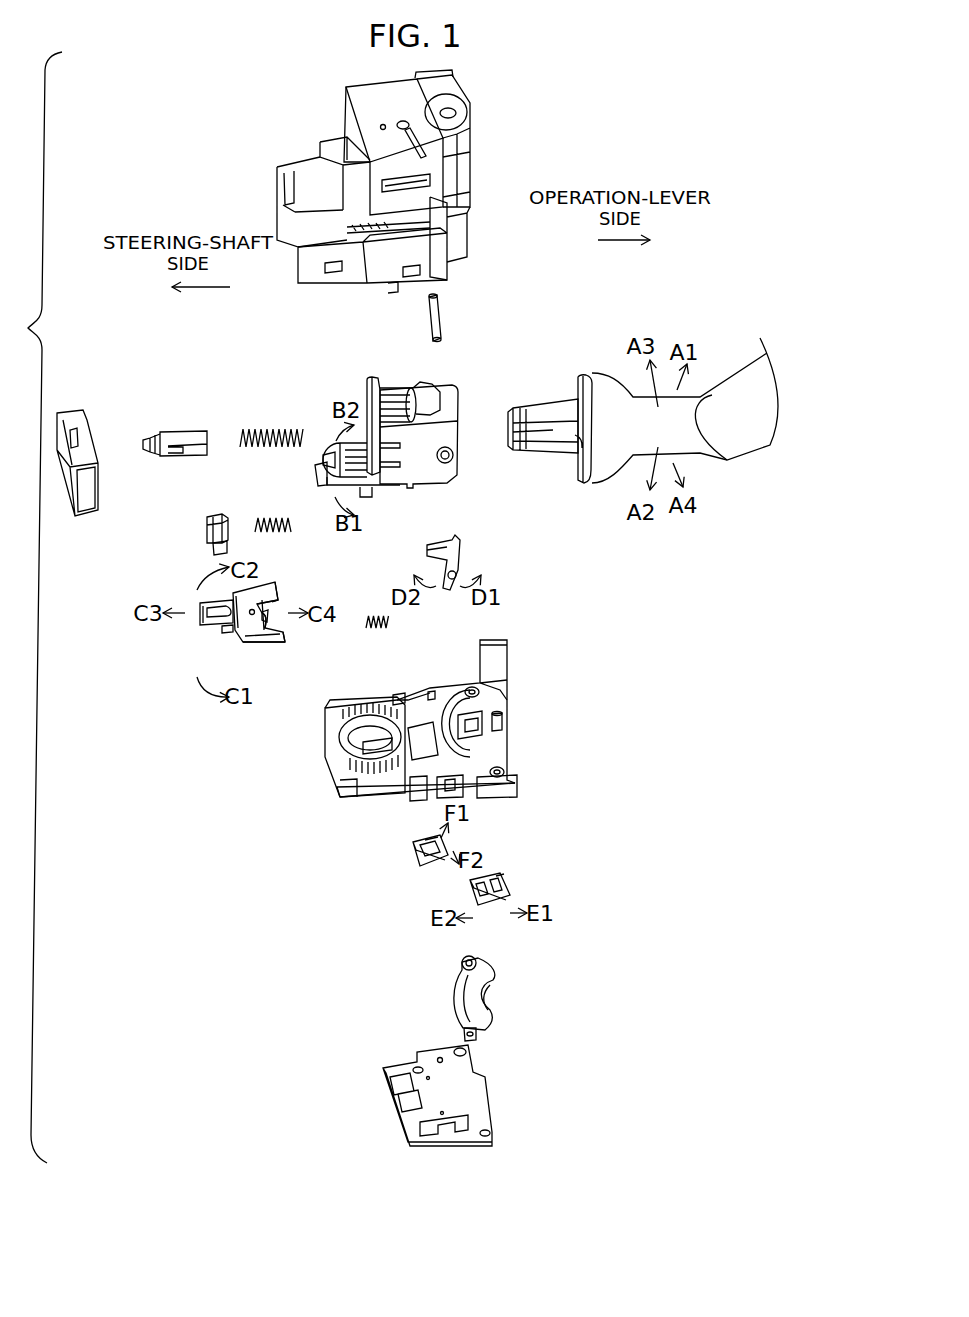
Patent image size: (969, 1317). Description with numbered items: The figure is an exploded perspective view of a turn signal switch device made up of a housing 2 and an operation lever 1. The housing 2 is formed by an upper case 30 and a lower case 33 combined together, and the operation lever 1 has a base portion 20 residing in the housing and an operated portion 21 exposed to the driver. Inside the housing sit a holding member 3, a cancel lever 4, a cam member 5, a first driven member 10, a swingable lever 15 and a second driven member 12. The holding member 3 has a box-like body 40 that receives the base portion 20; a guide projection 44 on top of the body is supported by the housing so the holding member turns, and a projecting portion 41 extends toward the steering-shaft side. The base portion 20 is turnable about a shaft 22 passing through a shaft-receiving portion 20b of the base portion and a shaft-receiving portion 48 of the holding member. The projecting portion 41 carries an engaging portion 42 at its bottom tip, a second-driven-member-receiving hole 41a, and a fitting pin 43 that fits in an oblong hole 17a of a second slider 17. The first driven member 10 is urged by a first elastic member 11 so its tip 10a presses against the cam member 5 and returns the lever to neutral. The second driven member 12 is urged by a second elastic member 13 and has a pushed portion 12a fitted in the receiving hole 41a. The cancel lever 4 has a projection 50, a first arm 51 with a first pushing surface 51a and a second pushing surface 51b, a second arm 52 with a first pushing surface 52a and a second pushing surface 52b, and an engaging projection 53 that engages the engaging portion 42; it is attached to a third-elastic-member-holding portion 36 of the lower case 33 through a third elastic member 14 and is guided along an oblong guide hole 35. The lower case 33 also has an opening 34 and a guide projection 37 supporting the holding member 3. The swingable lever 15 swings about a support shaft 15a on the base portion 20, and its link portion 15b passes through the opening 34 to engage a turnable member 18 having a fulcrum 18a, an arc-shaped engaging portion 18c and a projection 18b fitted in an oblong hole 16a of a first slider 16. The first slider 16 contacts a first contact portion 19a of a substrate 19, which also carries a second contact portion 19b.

The operation lever 1 is at (714, 383).
The housing 2 is at (519, 212).
The holding member 3 is at (364, 384).
The cancel lever 4 is at (237, 641).
The cam member 5 is at (72, 404).
The first driven member 10 is at (190, 424).
The tip 10a is at (150, 437).
The first elastic member 11 is at (270, 428).
The second driven member 12 is at (204, 525).
The pushed portion 12a is at (208, 543).
The second elastic member 13 is at (268, 520).
The third elastic member 14 is at (378, 630).
The swingable lever 15 is at (411, 563).
The support shaft 15a is at (437, 545).
The link portion 15b is at (447, 591).
The first slider 16 is at (520, 881).
The oblong hole 16a is at (502, 866).
The second slider 17 is at (411, 858).
The oblong hole 17a is at (405, 838).
The turnable member 18 is at (509, 983).
The fulcrum 18a is at (480, 958).
The projection 18b is at (462, 1022).
The arc-shaped engaging portion 18c is at (500, 1003).
The substrate 19 is at (491, 1096).
The first contact portion 19a is at (460, 1126).
The second contact portion 19b is at (400, 1103).
The base portion 20 is at (546, 392).
The shaft-receiving portion 20b is at (573, 463).
The operated portion 21 is at (738, 360).
The shaft 22 is at (429, 322).
The upper case 30 is at (471, 199).
The lower case 33 is at (509, 632).
The opening 34 is at (492, 748).
The oblong guide hole 35 is at (340, 745).
The third-elastic-member-holding portion 36 is at (400, 703).
The guide projection 37 is at (522, 742).
The body 40 is at (396, 387).
The projecting portion 41 is at (327, 446).
The second-driven-member-receiving hole 41a is at (310, 463).
The engaging portion 42 is at (321, 486).
The fitting pin 43 is at (370, 498).
The guide projection 44 is at (418, 384).
The shaft-receiving portion 48 is at (445, 464).
The projection 50 is at (202, 618).
The first arm 51 is at (272, 650).
The first pushing surface 51a is at (285, 630).
The second pushing surface 51b is at (285, 642).
The second arm 52 is at (270, 583).
The first pushing surface 52a is at (285, 601).
The second pushing surface 52b is at (282, 578).
The engaging projection 53 is at (259, 638).